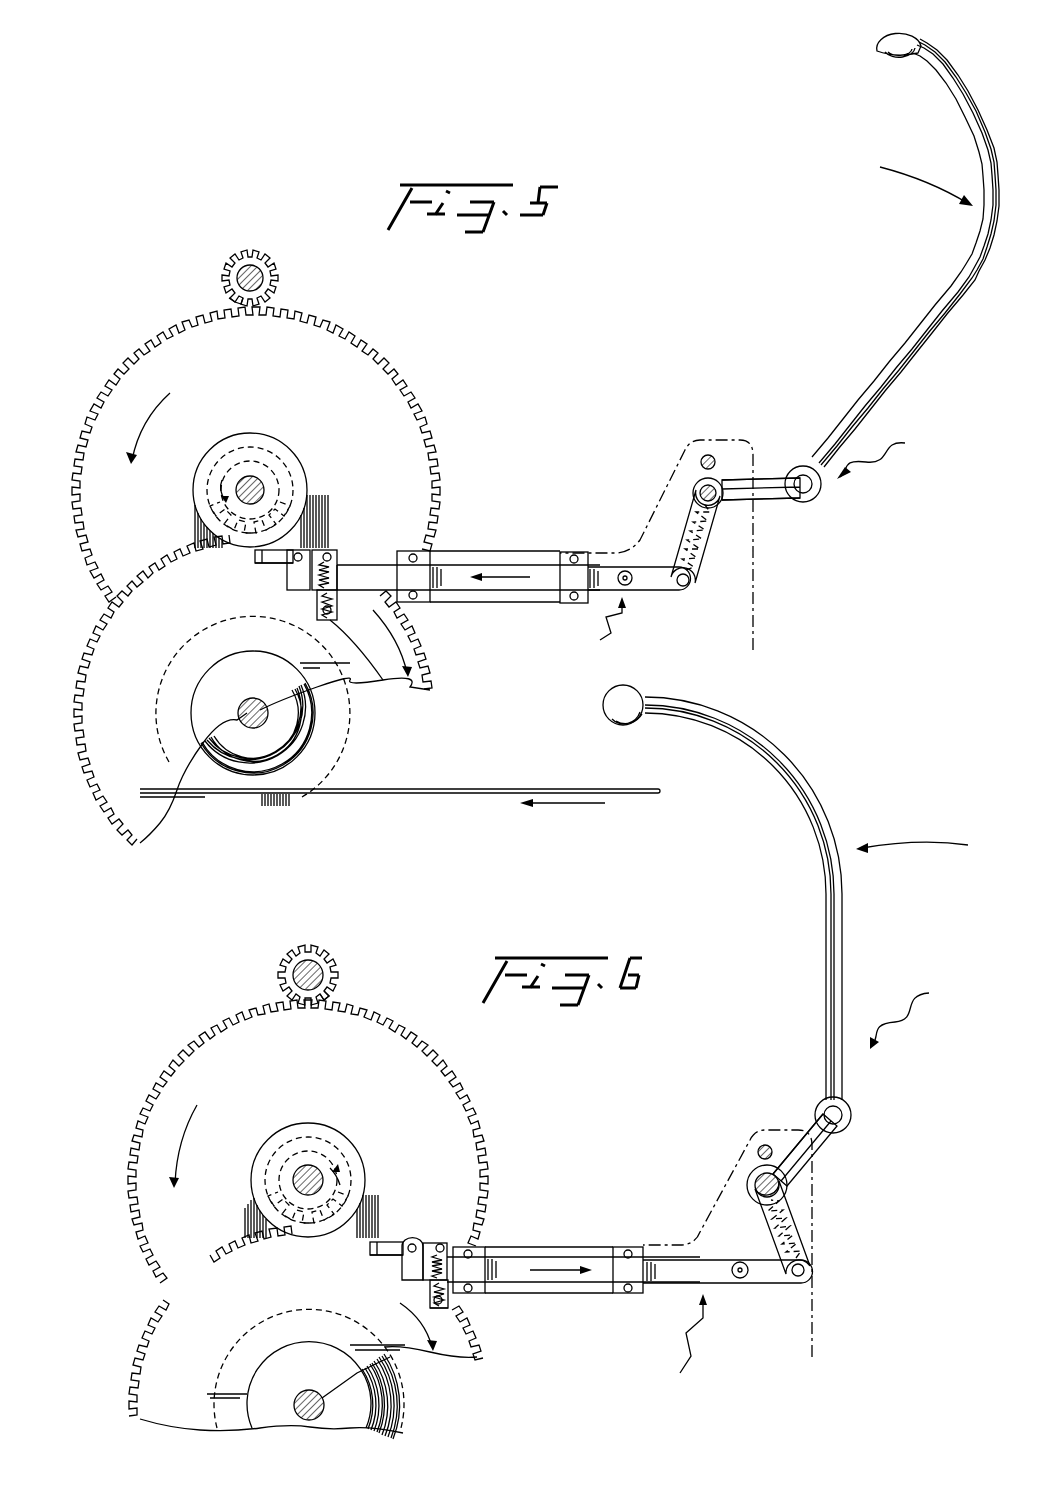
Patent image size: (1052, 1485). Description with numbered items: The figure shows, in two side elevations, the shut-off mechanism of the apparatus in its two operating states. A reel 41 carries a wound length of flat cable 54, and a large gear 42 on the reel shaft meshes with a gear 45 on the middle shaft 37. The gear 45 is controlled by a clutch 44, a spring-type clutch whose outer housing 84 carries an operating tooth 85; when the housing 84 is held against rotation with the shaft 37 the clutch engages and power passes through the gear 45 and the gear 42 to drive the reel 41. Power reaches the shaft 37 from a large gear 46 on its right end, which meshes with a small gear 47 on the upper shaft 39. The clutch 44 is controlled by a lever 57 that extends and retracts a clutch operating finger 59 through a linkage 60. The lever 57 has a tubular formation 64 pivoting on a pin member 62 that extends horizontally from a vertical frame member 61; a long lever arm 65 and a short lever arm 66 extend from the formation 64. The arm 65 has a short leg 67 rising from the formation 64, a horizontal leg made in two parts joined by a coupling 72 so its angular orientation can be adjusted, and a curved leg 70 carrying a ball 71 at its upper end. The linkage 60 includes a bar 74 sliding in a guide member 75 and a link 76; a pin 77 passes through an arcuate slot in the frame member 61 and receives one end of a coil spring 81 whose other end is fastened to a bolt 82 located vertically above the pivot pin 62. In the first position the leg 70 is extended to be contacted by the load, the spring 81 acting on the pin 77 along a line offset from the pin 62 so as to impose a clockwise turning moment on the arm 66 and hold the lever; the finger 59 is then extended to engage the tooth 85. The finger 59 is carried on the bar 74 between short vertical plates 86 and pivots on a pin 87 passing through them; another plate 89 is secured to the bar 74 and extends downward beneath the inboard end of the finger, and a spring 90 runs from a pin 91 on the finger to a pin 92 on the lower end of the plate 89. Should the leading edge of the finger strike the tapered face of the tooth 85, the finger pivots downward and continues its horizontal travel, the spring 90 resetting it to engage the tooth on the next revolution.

In FIG. 5, the middle shaft 37 is at (262, 481).
In FIG. 6, the middle shaft 37 is at (305, 1168).
In FIG. 5, the upper shaft 39 is at (240, 272).
In FIG. 6, the upper shaft 39 is at (297, 962).
In FIG. 5, the reel 41 is at (310, 762).
In FIG. 6, the reel 41 is at (377, 1410).
In FIG. 5, the large gear 42 is at (432, 690).
In FIG. 6, the large gear 42 is at (418, 1350).
In FIG. 5, the clutch 44 is at (306, 464).
In FIG. 6, the clutch 44 is at (361, 1150).
In FIG. 5, the gear 45 is at (302, 500).
In FIG. 6, the gear 45 is at (262, 1150).
In FIG. 5, the large gear 46 is at (125, 372).
In FIG. 6, the large gear 46 is at (188, 1058).
In FIG. 5, the small gear 47 is at (283, 275).
In FIG. 6, the small gear 47 is at (342, 965).
In FIG. 5, the flat cable 54 is at (471, 794).
In FIG. 5, the lever 57 is at (887, 454).
In FIG. 6, the lever 57 is at (913, 1015).
In FIG. 5, the clutch operating finger 59 is at (270, 562).
In FIG. 6, the clutch operating finger 59 is at (437, 1243).
In FIG. 5, the linkage 60 is at (603, 627).
In FIG. 6, the linkage 60 is at (687, 1346).
In FIG. 5, the vertical frame member 61 is at (755, 603).
In FIG. 6, the vertical frame member 61 is at (815, 1226).
In FIG. 5, the pin member 62 is at (695, 487).
In FIG. 6, the pin member 62 is at (750, 1178).
In FIG. 5, the tubular formation 64 is at (718, 480).
In FIG. 5, the long lever arm 65 is at (767, 479).
In FIG. 6, the long lever arm 65 is at (788, 1150).
In FIG. 5, the short lever arm 66 is at (712, 535).
In FIG. 6, the short lever arm 66 is at (773, 1212).
In FIG. 5, the short leg 67 is at (770, 500).
In FIG. 6, the short leg 67 is at (808, 1127).
In FIG. 5, the curved leg 70 is at (890, 362).
In FIG. 6, the curved leg 70 is at (795, 772).
In FIG. 5, the ball 71 is at (887, 48).
In FIG. 6, the ball 71 is at (632, 722).
In FIG. 5, the coupling 72 is at (820, 497).
In FIG. 6, the coupling 72 is at (852, 1112).
In FIG. 5, the bar 74 is at (510, 591).
In FIG. 6, the bar 74 is at (596, 1284).
In FIG. 5, the guide member 75 is at (571, 551).
In FIG. 6, the guide member 75 is at (628, 1246).
In FIG. 5, the link 76 is at (650, 591).
In FIG. 6, the link 76 is at (765, 1285).
In FIG. 5, the pin 77 is at (690, 588).
In FIG. 6, the pin 77 is at (805, 1270).
In FIG. 5, the coil spring 81 is at (716, 570).
In FIG. 6, the coil spring 81 is at (810, 1203).
In FIG. 5, the bolt 82 is at (707, 455).
In FIG. 6, the bolt 82 is at (760, 1147).
In FIG. 5, the outer housing 84 is at (215, 445).
In FIG. 6, the outer housing 84 is at (348, 1140).
In FIG. 5, the operating tooth 85 is at (255, 553).
In FIG. 6, the operating tooth 85 is at (375, 1243).
In FIG. 5, the short vertical plate 86 is at (292, 580).
In FIG. 6, the short vertical plate 86 is at (404, 1262).
In FIG. 5, the pin 87 is at (325, 549).
In FIG. 6, the pin 87 is at (447, 1250).
In FIG. 5, the plate 89 is at (385, 682).
In FIG. 6, the plate 89 is at (441, 1309).
In FIG. 5, the spring 90 is at (416, 552).
In FIG. 6, the spring 90 is at (470, 1250).
In FIG. 5, the pin 91 is at (330, 572).
In FIG. 6, the pin 91 is at (445, 1272).
In FIG. 5, the pin 92 is at (330, 620).
In FIG. 6, the pin 92 is at (451, 1303).